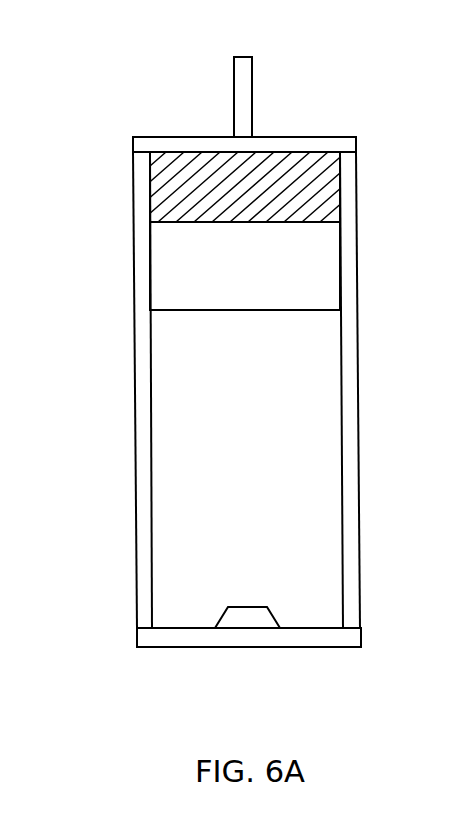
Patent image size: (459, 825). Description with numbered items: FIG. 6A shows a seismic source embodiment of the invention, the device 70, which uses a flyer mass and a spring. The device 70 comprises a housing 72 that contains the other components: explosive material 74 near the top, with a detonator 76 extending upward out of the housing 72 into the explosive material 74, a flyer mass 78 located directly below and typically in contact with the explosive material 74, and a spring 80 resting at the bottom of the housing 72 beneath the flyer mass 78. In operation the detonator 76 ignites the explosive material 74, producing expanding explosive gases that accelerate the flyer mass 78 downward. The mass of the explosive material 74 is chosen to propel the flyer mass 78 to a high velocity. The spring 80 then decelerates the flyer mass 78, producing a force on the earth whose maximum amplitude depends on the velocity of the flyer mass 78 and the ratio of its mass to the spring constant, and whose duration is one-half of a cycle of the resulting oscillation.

The device 70 is at (92, 86).
The housing 72 is at (135, 450).
The explosive material 74 is at (163, 200).
The detonator 76 is at (236, 100).
The flyer mass 78 is at (155, 272).
The spring 80 is at (227, 618).